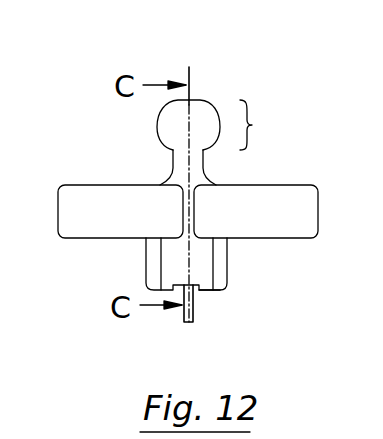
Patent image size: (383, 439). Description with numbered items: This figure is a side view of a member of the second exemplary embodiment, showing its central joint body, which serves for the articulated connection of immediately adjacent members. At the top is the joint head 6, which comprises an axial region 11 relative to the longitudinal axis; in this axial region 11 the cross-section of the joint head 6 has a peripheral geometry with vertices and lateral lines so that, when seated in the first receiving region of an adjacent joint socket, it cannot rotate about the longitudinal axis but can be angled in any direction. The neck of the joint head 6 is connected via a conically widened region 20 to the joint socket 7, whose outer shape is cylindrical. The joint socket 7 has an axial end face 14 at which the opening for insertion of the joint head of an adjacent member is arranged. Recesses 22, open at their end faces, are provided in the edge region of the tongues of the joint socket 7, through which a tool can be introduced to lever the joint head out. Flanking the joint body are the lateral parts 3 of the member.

The plates 3 is at (80, 195).
The joint head 6 is at (213, 103).
The joint socket 7 is at (225, 272).
The axial region 11 is at (272, 125).
The axial end face 14 is at (210, 292).
The conically widened region 20 is at (162, 176).
The recesses 22 is at (193, 310).